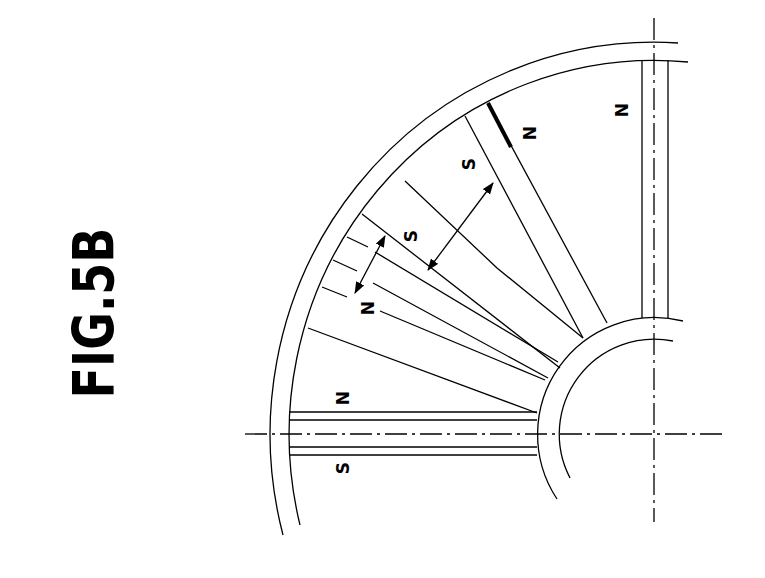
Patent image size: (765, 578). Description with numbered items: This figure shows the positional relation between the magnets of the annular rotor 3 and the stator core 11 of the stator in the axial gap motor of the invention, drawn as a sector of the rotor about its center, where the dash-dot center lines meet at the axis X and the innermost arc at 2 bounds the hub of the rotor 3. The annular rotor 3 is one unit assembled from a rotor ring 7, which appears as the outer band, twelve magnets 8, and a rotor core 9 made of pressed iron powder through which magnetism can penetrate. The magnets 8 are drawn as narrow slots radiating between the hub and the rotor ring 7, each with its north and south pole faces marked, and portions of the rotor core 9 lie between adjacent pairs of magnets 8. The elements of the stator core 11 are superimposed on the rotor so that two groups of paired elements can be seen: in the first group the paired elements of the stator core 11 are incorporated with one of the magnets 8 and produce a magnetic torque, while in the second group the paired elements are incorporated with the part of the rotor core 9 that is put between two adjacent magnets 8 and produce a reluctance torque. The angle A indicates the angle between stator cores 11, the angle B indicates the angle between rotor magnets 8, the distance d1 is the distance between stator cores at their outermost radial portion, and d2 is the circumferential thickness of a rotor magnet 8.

The shaft 2 is at (620, 395).
The annular rotor 3 is at (288, 281).
The rotor ring 7 is at (357, 188).
The magnet 8 is at (343, 242).
The rotor core 9 is at (310, 390).
The stator core 11 is at (318, 323).
The angle A is at (363, 219).
The angle B is at (453, 215).
The rotation axis X is at (654, 437).
The distance d1 is at (328, 410).
The circumferential thickness d2 is at (483, 147).